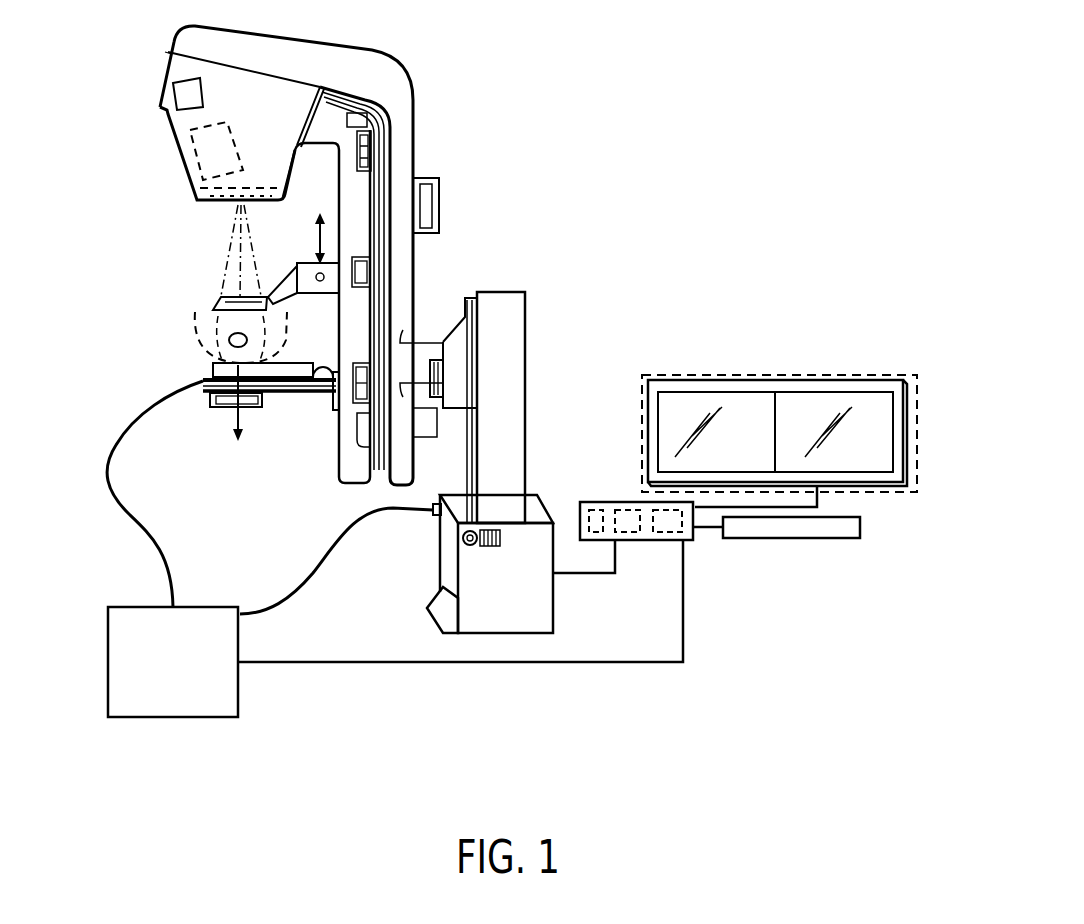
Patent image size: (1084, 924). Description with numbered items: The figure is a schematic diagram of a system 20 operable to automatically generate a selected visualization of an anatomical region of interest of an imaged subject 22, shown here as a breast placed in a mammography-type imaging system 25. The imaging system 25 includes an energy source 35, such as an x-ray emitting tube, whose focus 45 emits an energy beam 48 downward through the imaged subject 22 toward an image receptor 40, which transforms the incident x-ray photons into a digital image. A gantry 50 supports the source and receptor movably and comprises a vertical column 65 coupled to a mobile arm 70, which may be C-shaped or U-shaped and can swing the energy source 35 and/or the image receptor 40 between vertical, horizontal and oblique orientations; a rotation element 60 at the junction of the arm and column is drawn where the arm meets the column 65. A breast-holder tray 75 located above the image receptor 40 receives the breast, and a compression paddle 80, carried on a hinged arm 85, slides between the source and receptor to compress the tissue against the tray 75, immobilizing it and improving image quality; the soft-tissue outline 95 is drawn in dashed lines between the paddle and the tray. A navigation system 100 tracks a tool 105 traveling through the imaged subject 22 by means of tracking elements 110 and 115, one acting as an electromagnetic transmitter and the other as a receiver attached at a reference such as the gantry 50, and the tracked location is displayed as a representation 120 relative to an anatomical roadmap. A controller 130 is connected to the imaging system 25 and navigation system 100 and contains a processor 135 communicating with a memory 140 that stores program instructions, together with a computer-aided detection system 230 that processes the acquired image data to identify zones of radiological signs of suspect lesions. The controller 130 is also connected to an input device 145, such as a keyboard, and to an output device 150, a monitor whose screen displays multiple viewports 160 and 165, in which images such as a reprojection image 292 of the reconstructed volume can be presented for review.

The system 20 is at (600, 150).
The imaged subject 22 is at (200, 326).
The imaging system 25 is at (477, 127).
The energy source 35 is at (188, 162).
The image receptor 40 is at (227, 402).
The focus 45 is at (194, 196).
The energy beam 48 is at (230, 258).
The gantry 50 is at (491, 238).
The rotation mechanism 60 is at (453, 406).
The vertical column 65 is at (513, 327).
The mobile arm 70 is at (357, 62).
The breast-holder tray 75 is at (232, 346).
The compression paddle 80 is at (272, 302).
The hinged arm 85 is at (328, 256).
The breast 95 is at (228, 344).
The navigation system 100 is at (173, 718).
The tool 105 is at (268, 392).
The tracking element 110 is at (256, 424).
The tracking element 115 is at (431, 521).
The representation 120 is at (348, 298).
The controller 130 is at (772, 643).
The processor 135 is at (652, 530).
The memory 140 is at (633, 543).
The input device 145 is at (826, 538).
The output device 150 is at (779, 409).
The viewport 160 is at (731, 405).
The viewport 165 is at (821, 404).
The computer-aided detection system 230 is at (688, 529).
The reprojection image 292 is at (234, 442).